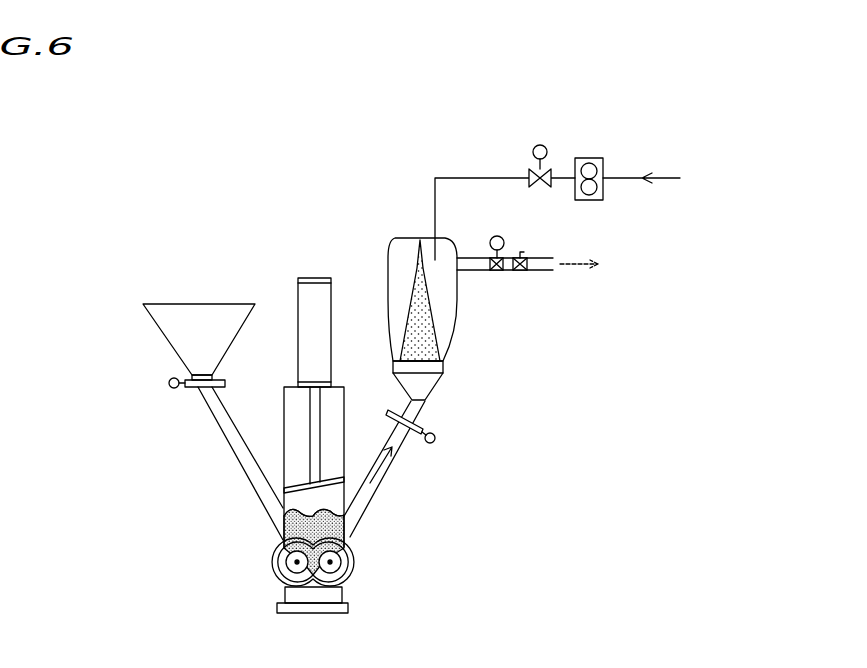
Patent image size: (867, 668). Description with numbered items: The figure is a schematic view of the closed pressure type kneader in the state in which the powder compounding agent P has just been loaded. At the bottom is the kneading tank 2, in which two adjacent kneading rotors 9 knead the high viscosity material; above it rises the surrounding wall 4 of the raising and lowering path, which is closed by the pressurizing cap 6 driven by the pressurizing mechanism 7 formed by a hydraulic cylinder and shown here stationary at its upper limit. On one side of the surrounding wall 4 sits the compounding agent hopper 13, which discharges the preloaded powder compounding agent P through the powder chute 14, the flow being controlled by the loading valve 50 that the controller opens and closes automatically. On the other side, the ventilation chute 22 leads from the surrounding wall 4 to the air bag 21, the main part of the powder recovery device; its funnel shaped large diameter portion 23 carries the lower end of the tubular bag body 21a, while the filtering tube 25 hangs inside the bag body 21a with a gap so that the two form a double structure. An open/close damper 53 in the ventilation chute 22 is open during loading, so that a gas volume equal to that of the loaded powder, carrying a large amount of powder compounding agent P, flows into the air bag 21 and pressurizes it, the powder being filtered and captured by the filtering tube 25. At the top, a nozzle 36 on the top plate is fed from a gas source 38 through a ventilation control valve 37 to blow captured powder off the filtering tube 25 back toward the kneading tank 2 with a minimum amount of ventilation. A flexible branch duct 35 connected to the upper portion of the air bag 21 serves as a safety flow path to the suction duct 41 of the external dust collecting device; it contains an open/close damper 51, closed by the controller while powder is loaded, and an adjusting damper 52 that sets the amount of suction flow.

The kneading tank 2 is at (313, 575).
The surrounding wall 4 is at (285, 527).
The pressurizing cap 6 is at (320, 493).
The pressurizing mechanism 7 is at (310, 340).
The kneading rotors 9 is at (292, 566).
The compounding agent hopper 13 is at (175, 328).
The powder chute 14 is at (243, 463).
The air bag 21 is at (360, 214).
The bag body 21a is at (457, 330).
The ventilation chute 22 is at (410, 448).
The funnel shaped large diameter portion 23 is at (430, 380).
The filtering tube 25 is at (415, 310).
The branch duct 35 is at (470, 272).
The nozzle 36 is at (433, 197).
The ventilation control valve 37 is at (538, 145).
The gas source 38 is at (592, 158).
The suction duct 41 is at (532, 258).
The loading valve 50 is at (203, 390).
The open/close damper 51 is at (490, 257).
The adjusting damper 52 is at (512, 272).
The open/close damper 53 is at (435, 437).
The powder compounding agent P is at (327, 530).